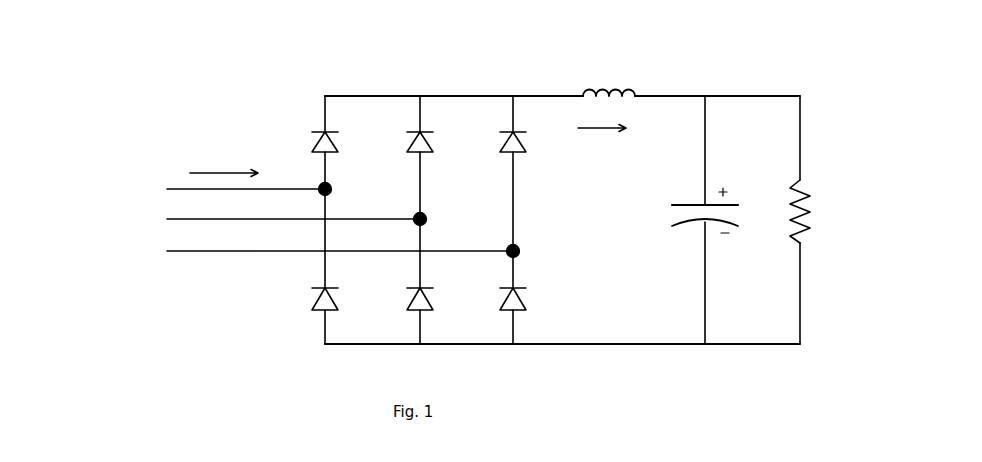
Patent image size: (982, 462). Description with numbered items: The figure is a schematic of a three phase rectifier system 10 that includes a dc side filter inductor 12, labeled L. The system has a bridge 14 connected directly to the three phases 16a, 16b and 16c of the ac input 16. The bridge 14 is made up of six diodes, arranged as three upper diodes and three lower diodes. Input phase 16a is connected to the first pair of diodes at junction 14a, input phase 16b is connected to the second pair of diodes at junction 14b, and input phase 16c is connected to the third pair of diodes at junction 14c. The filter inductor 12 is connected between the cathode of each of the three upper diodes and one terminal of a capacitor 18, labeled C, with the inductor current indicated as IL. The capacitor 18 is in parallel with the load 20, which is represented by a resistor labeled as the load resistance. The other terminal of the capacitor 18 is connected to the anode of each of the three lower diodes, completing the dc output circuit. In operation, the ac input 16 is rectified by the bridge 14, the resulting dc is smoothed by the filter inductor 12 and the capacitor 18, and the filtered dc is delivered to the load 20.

The three phase rectifier system 10 is at (497, 32).
The dc side filter inductor 12 is at (637, 76).
The bridge 14 is at (315, 270).
The junction 14a is at (334, 186).
The junction 14b is at (429, 215).
The junction 14c is at (522, 250).
The ac input 16 is at (112, 287).
The input phase 16a is at (167, 180).
The input phase 16b is at (199, 226).
The input phase 16c is at (171, 262).
The capacitor 18 is at (712, 186).
The load 20 is at (813, 200).